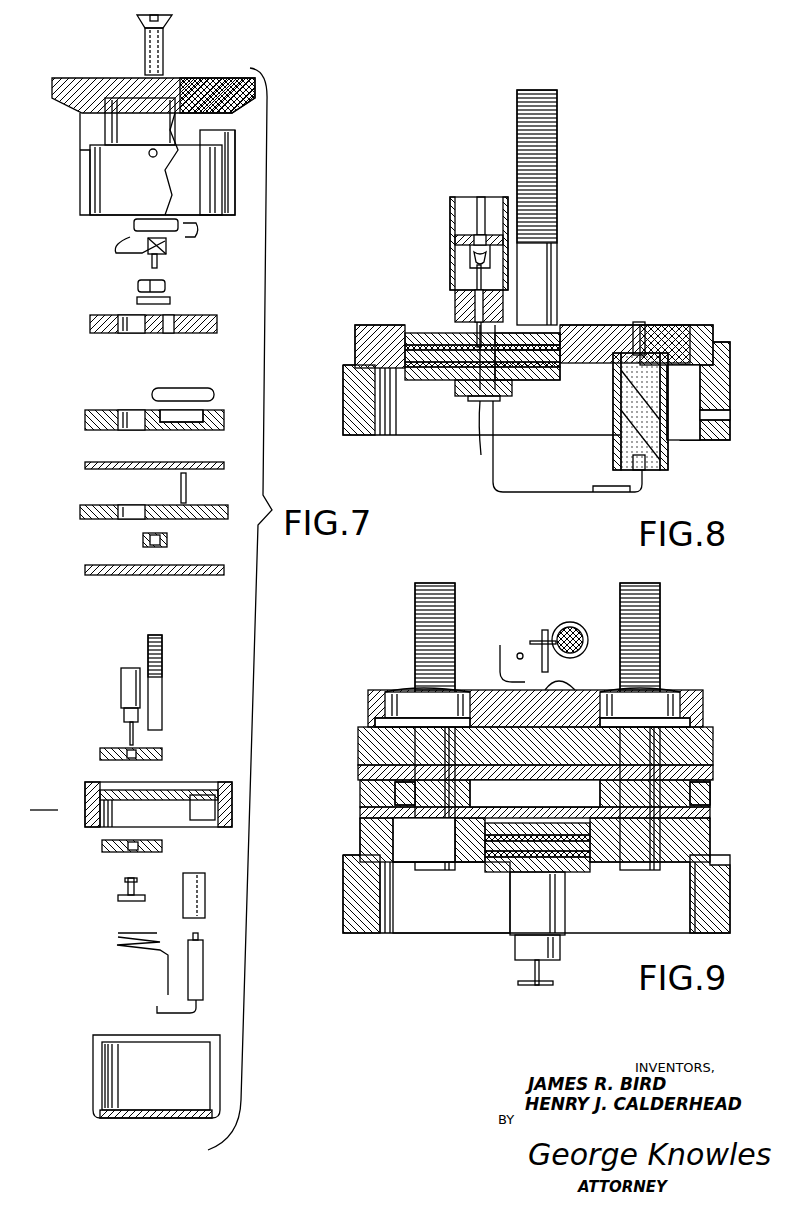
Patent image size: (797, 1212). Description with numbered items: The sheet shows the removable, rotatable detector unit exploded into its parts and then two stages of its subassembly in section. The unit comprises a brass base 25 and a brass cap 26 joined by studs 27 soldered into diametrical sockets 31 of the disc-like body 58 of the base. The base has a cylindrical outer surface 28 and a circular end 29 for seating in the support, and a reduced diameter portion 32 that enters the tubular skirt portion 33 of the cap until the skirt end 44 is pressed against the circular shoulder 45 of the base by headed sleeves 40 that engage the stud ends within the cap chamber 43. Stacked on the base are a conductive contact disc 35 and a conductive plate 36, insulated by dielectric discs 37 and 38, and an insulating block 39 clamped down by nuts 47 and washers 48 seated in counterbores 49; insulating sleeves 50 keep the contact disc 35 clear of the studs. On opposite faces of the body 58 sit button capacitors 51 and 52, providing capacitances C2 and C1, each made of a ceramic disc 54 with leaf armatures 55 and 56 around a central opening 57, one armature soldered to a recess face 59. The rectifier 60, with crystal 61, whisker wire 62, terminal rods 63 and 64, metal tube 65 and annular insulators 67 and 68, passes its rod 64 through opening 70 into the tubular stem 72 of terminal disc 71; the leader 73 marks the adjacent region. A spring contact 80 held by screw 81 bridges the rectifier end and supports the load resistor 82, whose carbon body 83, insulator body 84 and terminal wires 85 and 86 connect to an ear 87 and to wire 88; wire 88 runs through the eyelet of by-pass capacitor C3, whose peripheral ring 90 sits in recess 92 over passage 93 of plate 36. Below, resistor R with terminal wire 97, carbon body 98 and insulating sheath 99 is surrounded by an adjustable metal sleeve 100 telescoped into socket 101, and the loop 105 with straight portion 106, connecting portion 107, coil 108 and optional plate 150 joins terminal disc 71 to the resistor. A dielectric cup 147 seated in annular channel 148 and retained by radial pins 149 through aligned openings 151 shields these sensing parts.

In FIG. 7, the base 25 is at (83, 812).
In FIG. 8, the base 25 is at (355, 372).
In FIG. 9, the base 25 is at (352, 873).
In FIG. 7, the cap 26 is at (76, 130).
In FIG. 7, the studs 27 is at (163, 692).
In FIG. 8, the studs 27 is at (557, 256).
In FIG. 9, the studs 27 is at (420, 754).
In FIG. 8, the cylindrical outer surface 28 is at (343, 402).
In FIG. 9, the cylindrical outer surface 28 is at (343, 913).
In FIG. 8, the circular end of the base 29 is at (345, 436).
In FIG. 9, the circular end of the base 29 is at (362, 934).
In FIG. 9, the sockets 31 is at (450, 857).
In FIG. 8, the reduced diameter portion 32 is at (714, 328).
In FIG. 9, the reduced diameter portion 32 is at (362, 842).
In FIG. 7, the tubular skirt portion 33 is at (143, 197).
In FIG. 7, the contact disc 35 is at (206, 510).
In FIG. 9, the contact disc 35 is at (365, 800).
In FIG. 7, the conductive plate 36 is at (224, 417).
In FIG. 9, the conductive plate 36 is at (358, 742).
In FIG. 7, the insulating disc 37 is at (90, 466).
In FIG. 9, the insulating disc 37 is at (358, 775).
In FIG. 7, the insulating disc 38 is at (90, 571).
In FIG. 9, the insulating disc 38 is at (362, 814).
In FIG. 7, the insulating block 39 is at (217, 325).
In FIG. 9, the insulating block 39 is at (368, 704).
In FIG. 7, the headed sleeves 40 is at (145, 42).
In FIG. 7, the chamber 43 is at (135, 115).
In FIG. 7, the end of the cap skirt 44 is at (230, 215).
In FIG. 7, the circular shoulder 45 is at (228, 792).
In FIG. 8, the circular shoulder 45 is at (714, 360).
In FIG. 9, the circular shoulder 45 is at (720, 856).
In FIG. 7, the nuts 47 is at (166, 287).
In FIG. 9, the nuts 47 is at (418, 690).
In FIG. 7, the metal washers 48 is at (171, 301).
In FIG. 9, the metal washers 48 is at (390, 696).
In FIG. 9, the counterbores 49 is at (692, 692).
In FIG. 7, the insulating sleeves 50 is at (143, 540).
In FIG. 9, the insulating sleeves 50 is at (395, 790).
In FIG. 7, the capacitor 51 is at (100, 755).
In FIG. 8, the capacitor 51 is at (404, 330).
In FIG. 7, the capacitor 52 is at (102, 852).
In FIG. 8, the capacitor 52 is at (410, 380).
In FIG. 8, the insulating disc 54 is at (414, 334).
In FIG. 9, the insulating disc 54 is at (500, 843).
In FIG. 7, the armature element 55 is at (128, 852).
In FIG. 8, the armature element 55 is at (438, 340).
In FIG. 9, the armature element 55 is at (537, 846).
In FIG. 7, the armature element 56 is at (102, 843).
In FIG. 8, the armature element 56 is at (405, 353).
In FIG. 9, the armature element 56 is at (598, 858).
In FIG. 7, the central opening 57 is at (138, 852).
In FIG. 8, the central opening 57 is at (468, 333).
In FIG. 9, the central opening 57 is at (537, 829).
In FIG. 8, the disc-like body 58 is at (636, 323).
In FIG. 9, the disc-like body 58 is at (662, 860).
In FIG. 8, the recess face 59 is at (566, 342).
In FIG. 7, the crystal rectifier 60 is at (121, 680).
In FIG. 8, the crystal rectifier 60 is at (452, 282).
In FIG. 8, the crystal 61 is at (470, 256).
In FIG. 8, the whisker wire 62 is at (472, 262).
In FIG. 7, the terminal rod 63 is at (133, 668).
In FIG. 8, the terminal rod 63 is at (477, 212).
In FIG. 7, the terminal rod 64 is at (128, 735).
In FIG. 8, the terminal rod 64 is at (476, 273).
In FIG. 8, the metal tube 65 is at (460, 240).
In FIG. 8, the annular insulator 67 is at (455, 220).
In FIG. 8, the annular insulator 68 is at (503, 293).
In FIG. 7, the opening 70 is at (130, 790).
In FIG. 8, the opening 70 is at (507, 334).
In FIG. 7, the terminal disc 71 is at (130, 901).
In FIG. 8, the terminal disc 71 is at (512, 392).
In FIG. 7, the tubular stem 72 is at (128, 888).
In FIG. 8, the tubular stem 72 is at (500, 400).
In FIG. 8, the leader point 73 is at (500, 320).
In FIG. 7, the spring contact 80 is at (113, 247).
In FIG. 9, the spring contact 80 is at (565, 690).
In FIG. 7, the screw 81 is at (152, 262).
In FIG. 9, the screw 81 is at (548, 688).
In FIG. 7, the load resistor 82 is at (166, 242).
In FIG. 9, the load resistor 82 is at (580, 655).
In FIG. 9, the resistor body 83 is at (583, 634).
In FIG. 9, the insulator body 84 is at (570, 622).
In FIG. 7, the terminal wire 85 is at (134, 226).
In FIG. 9, the terminal wire 85 is at (522, 652).
In FIG. 7, the terminal wire 86 is at (197, 238).
In FIG. 9, the terminal wire 86 is at (550, 630).
In FIG. 9, the ear 87 is at (500, 648).
In FIG. 7, the wire 88 is at (181, 486).
In FIG. 9, the wire 88 is at (547, 630).
In FIG. 7, the peripheral ring 90 is at (156, 395).
In FIG. 7, the recess 92 is at (210, 410).
In FIG. 7, the passage 93 is at (196, 430).
In FIG. 8, the terminal wire 97 is at (646, 325).
In FIG. 8, the resistive body 98 is at (655, 425).
In FIG. 8, the insulating sheath 99 is at (660, 464).
In FIG. 9, the insulating sheath 99 is at (561, 951).
In FIG. 7, the metal sleeve 100 is at (205, 880).
In FIG. 8, the metal sleeve 100 is at (613, 423).
In FIG. 9, the metal sleeve 100 is at (548, 914).
In FIG. 7, the cylindrical socket 101 is at (193, 795).
In FIG. 8, the cylindrical socket 101 is at (604, 360).
In FIG. 8, the wire loop 105 is at (514, 489).
In FIG. 8, the straight portion 106 is at (593, 496).
In FIG. 9, the straight portion 106 is at (540, 986).
In FIG. 8, the radial connecting portion 107 is at (490, 480).
In FIG. 7, the coil portion 108 is at (118, 938).
In FIG. 8, the coil portion 108 is at (482, 455).
In FIG. 7, the plastic cup 147 is at (92, 1062).
In FIG. 7, the internal annular channel 148 is at (216, 810).
In FIG. 9, the internal annular channel 148 is at (395, 918).
In FIG. 7, the radial pins 149 is at (48, 808).
In FIG. 8, the plate 150 is at (600, 487).
In FIG. 7, the aligned openings 151 is at (113, 822).
In FIG. 8, the aligned openings 151 is at (425, 418).
In FIG. 7, the capacitance C1 is at (170, 848).
In FIG. 7, the capacitance C2 is at (172, 756).
In FIG. 7, the by-pass capacitor C3 is at (112, 392).
In FIG. 7, the resistor R is at (203, 966).
In FIG. 8, the resistor R is at (670, 480).